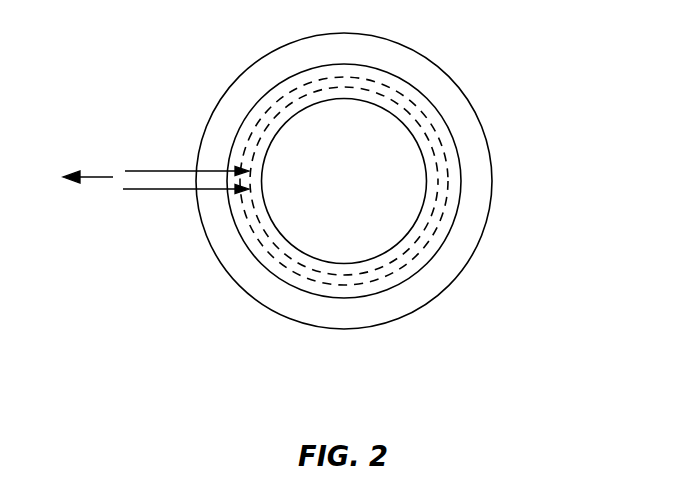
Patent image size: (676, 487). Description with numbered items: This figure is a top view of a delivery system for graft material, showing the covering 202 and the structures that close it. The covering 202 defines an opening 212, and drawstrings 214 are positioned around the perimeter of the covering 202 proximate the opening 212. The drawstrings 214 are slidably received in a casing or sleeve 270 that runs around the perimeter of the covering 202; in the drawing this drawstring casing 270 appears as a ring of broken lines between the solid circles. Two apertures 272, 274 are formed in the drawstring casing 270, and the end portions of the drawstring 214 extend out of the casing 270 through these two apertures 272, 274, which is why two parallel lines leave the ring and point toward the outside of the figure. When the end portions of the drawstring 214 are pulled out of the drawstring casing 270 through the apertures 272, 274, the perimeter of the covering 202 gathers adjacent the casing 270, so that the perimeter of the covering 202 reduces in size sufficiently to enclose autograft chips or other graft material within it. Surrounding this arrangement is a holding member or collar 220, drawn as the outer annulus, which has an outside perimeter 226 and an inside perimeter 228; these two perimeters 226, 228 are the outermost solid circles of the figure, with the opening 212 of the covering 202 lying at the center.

The covering 202 is at (360, 192).
The opening 212 is at (385, 245).
The drawstrings 214 is at (140, 190).
The collar 220 is at (345, 173).
The outside perimeter 226 is at (425, 57).
The inside perimeter 228 is at (443, 118).
The drawstring casing 270 is at (297, 273).
The aperture 272 is at (240, 194).
The aperture 274 is at (240, 167).